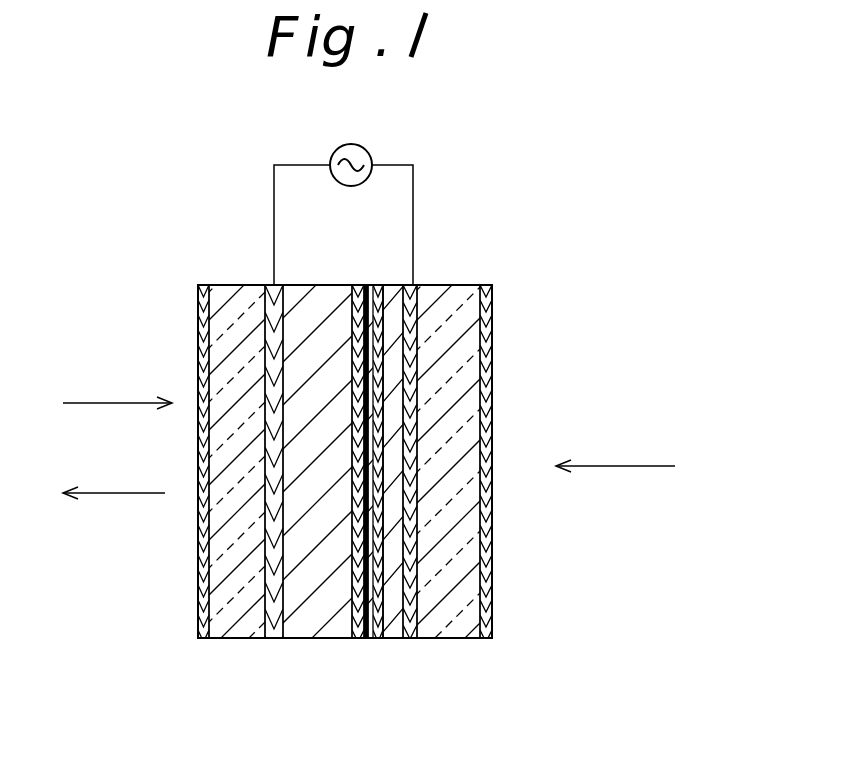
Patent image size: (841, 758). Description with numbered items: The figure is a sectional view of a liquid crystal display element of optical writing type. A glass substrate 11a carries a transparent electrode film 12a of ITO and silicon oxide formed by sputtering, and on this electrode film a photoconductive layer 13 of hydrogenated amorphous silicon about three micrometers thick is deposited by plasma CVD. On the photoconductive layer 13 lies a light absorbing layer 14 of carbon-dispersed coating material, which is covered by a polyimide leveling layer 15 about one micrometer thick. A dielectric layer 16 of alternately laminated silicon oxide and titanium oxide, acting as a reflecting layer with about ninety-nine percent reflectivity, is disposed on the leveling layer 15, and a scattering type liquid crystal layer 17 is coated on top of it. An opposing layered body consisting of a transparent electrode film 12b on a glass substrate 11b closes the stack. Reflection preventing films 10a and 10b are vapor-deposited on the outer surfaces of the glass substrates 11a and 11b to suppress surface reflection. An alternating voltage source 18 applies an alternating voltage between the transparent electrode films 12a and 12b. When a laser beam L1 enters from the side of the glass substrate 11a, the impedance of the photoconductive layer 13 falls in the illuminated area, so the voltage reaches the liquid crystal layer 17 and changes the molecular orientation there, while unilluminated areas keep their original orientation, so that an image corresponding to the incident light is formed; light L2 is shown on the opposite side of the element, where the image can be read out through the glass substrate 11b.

The reflection preventing film 10a is at (493, 352).
The reflection preventing film 10b is at (201, 333).
The glass substrate 11a is at (460, 296).
The glass substrate 11b is at (222, 294).
The transparent electrode film 12a is at (412, 625).
The transparent electrode film 12b is at (272, 625).
The photoconductive layer 13 is at (392, 627).
The light absorbing layer 14 is at (372, 628).
The leveling layer 15 is at (366, 288).
The dielectric layer 16 is at (358, 628).
The liquid crystal layer 17 is at (318, 628).
The alternating voltage source 18 is at (367, 151).
The laser beam L1 is at (623, 467).
The emergent light L2 is at (97, 402).